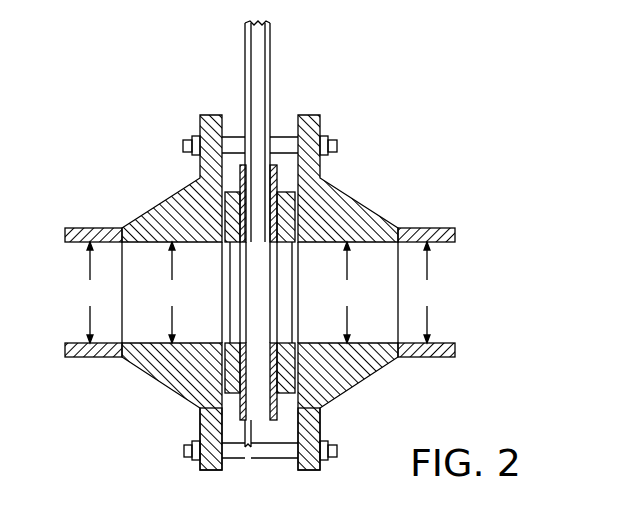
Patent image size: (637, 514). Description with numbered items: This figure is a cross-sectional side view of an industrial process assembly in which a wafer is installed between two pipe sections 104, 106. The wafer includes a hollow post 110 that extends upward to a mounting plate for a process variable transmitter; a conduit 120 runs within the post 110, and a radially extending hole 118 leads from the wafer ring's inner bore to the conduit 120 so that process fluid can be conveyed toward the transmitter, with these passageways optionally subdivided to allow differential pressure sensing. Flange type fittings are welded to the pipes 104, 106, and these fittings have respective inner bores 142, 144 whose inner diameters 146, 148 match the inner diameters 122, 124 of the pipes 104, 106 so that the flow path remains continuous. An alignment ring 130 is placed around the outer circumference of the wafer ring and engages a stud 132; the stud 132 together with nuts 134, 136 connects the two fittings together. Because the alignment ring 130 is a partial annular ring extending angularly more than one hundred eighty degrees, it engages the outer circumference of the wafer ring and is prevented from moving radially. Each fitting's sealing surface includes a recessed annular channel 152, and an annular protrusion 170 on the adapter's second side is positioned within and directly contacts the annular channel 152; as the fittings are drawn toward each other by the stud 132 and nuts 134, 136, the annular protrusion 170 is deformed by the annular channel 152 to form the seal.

The pipe section 104 is at (68, 357).
The pipe section 106 is at (440, 357).
The hollow post 110 is at (272, 78).
The radially extending hole 118 is at (278, 196).
The conduit 120 is at (258, 55).
The inner diameter 122 is at (98, 292).
The inner diameter 124 is at (424, 292).
The alignment ring 130 is at (254, 446).
The stud 132 is at (222, 470).
The nut 134 is at (200, 460).
The nut 136 is at (332, 460).
The inner bore 142 is at (137, 252).
The inner bore 144 is at (382, 250).
The inner diameter 146 is at (200, 292).
The inner diameter 148 is at (320, 292).
The annular channel 152 is at (320, 392).
The annular protrusion 170 is at (320, 412).